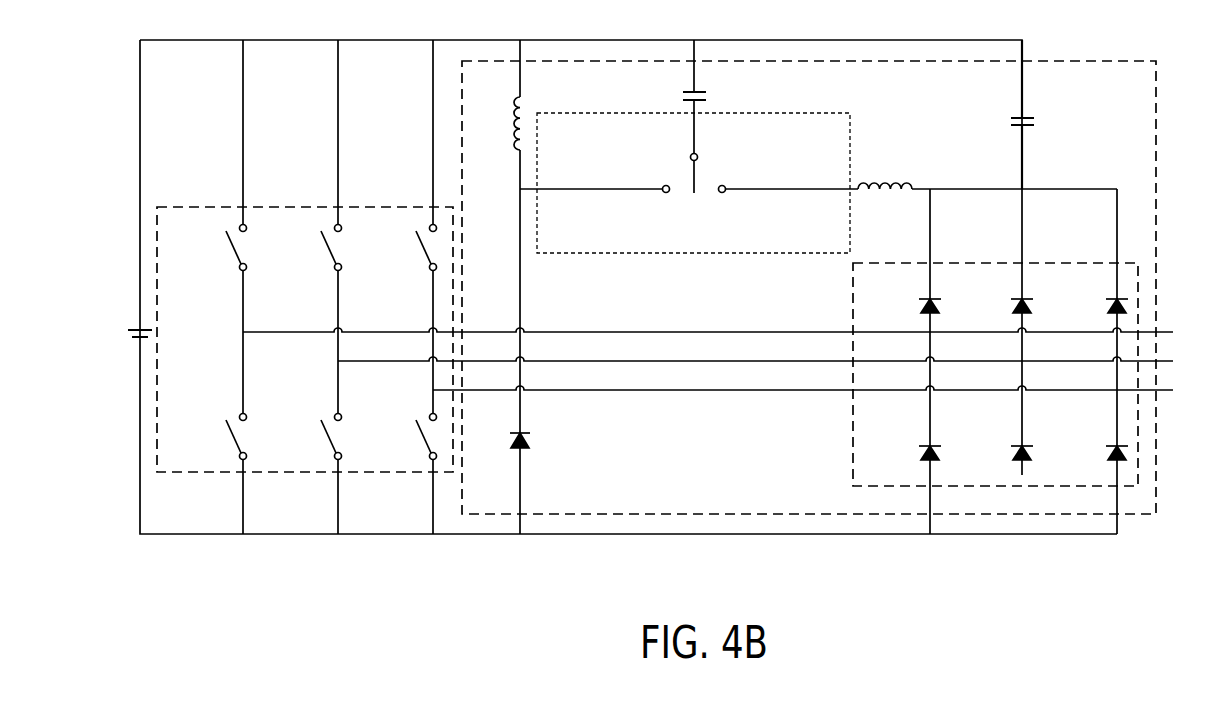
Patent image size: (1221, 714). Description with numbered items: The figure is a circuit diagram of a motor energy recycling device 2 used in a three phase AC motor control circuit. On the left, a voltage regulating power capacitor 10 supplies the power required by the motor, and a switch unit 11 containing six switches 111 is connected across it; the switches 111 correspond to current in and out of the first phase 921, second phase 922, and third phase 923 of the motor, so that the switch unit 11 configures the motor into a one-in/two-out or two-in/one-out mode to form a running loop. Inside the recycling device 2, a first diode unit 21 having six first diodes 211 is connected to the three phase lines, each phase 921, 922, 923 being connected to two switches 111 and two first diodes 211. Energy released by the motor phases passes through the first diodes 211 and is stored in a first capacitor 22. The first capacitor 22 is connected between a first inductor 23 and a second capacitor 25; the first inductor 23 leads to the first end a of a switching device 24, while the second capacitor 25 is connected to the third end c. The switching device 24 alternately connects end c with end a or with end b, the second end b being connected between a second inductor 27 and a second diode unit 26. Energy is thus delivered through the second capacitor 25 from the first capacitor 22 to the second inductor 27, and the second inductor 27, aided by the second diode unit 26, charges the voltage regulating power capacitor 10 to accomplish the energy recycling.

The voltage regulating power capacitor 10 is at (129, 333).
The switch unit 11 is at (372, 206).
The switches 111 is at (422, 436).
The motor energy recycling device 2 is at (1156, 171).
The second inductor 27 is at (511, 127).
The second capacitor 25 is at (682, 96).
The switching device 24 is at (745, 113).
The first inductor 23 is at (890, 182).
The first capacitor 22 is at (1011, 122).
The second diode unit 26 is at (530, 441).
The first diode unit 21 is at (853, 435).
The first diodes 211 is at (918, 306).
The first phase 921 is at (728, 331).
The second phase 922 is at (775, 360).
The third phase 923 is at (823, 389).